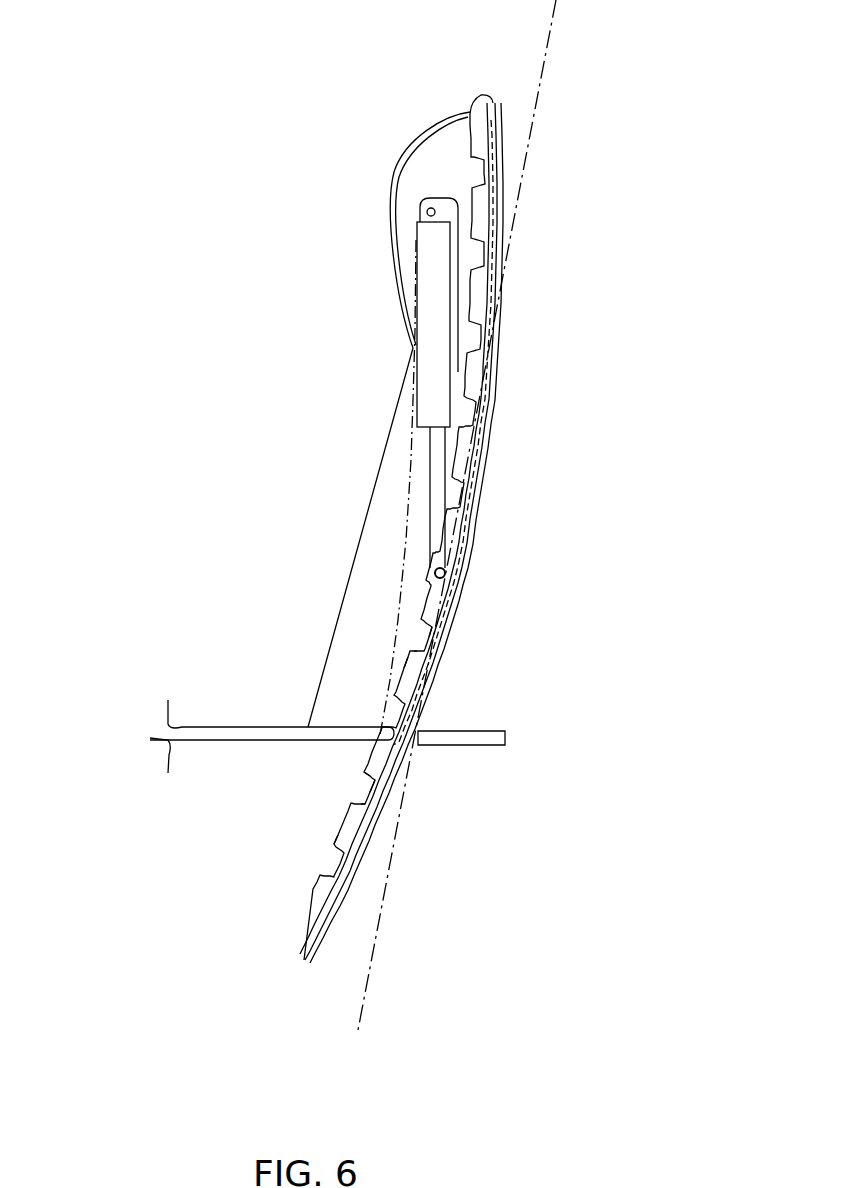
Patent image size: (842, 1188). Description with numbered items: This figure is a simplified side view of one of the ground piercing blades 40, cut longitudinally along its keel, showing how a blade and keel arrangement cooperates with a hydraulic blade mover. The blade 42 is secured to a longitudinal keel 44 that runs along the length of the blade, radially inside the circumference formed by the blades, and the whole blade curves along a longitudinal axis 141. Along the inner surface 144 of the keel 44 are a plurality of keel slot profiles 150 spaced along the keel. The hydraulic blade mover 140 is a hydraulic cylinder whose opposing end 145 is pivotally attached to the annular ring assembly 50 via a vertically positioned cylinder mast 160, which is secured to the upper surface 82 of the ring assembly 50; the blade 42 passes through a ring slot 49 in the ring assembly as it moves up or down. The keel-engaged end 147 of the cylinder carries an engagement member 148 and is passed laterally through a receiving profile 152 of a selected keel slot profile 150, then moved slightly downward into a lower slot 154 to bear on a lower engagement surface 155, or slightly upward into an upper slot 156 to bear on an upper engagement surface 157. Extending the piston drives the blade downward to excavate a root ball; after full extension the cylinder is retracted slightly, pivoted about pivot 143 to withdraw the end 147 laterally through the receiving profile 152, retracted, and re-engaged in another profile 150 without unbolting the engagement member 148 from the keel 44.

The ground piercing blade 40 is at (352, 129).
The blade 42 is at (463, 178).
The longitudinal keel 44 is at (487, 128).
The ring slot 49 is at (417, 747).
The annular ring assembly 50 is at (240, 732).
The upper surface of annular ring assembly 82 is at (283, 727).
The hydraulic blade mover 140 is at (423, 283).
The longitudinal axis 141 is at (548, 72).
The pivot 143 is at (427, 210).
The inner surface of the keel 144 is at (340, 837).
The opposing end of the hydraulic blade cylinder 145 is at (423, 248).
The keel-engaged end of the blade mover 147 is at (437, 548).
The engagement member 148 is at (435, 573).
The keel slot profile 150 is at (348, 796).
The receiving profile 152 is at (417, 656).
The lower slot 154 is at (418, 667).
The lower engagement surface 155 is at (380, 807).
The upper slot 156 is at (443, 640).
The upper engagement surface 157 is at (383, 805).
The cylinder mast 160 is at (447, 213).